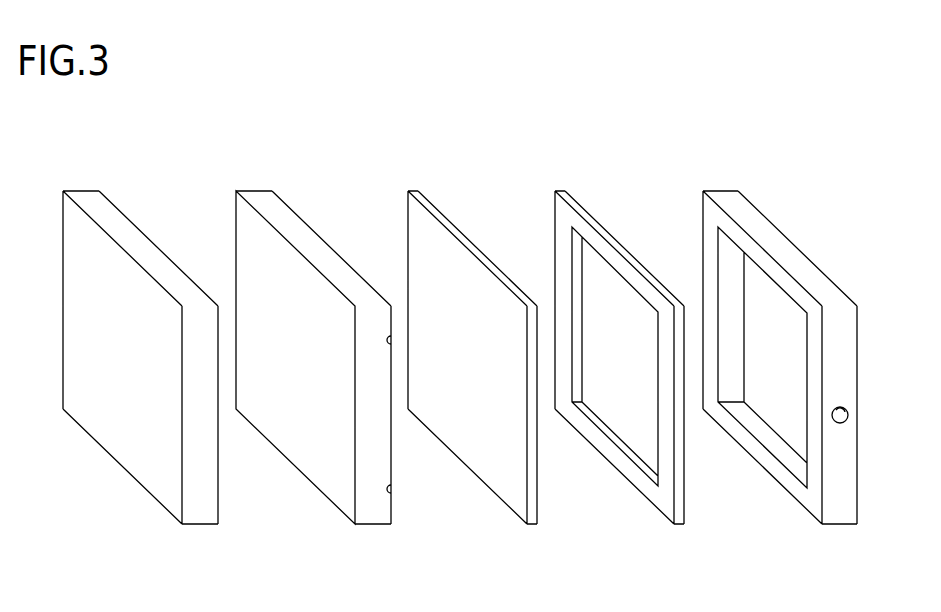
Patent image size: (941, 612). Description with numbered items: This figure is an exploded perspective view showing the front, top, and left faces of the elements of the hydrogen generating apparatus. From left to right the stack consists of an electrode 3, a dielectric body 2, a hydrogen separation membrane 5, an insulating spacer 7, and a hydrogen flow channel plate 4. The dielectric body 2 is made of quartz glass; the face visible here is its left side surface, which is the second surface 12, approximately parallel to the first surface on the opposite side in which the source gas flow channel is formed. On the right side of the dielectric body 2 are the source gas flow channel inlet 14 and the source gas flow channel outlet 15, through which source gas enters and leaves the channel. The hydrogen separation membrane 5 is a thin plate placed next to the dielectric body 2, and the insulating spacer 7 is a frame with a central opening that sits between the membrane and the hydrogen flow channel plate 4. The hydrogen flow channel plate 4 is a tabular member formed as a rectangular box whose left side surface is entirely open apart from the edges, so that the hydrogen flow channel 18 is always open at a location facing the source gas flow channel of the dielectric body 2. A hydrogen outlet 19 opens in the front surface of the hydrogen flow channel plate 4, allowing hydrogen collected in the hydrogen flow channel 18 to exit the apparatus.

The electrode 3 is at (108, 218).
The dielectric body 2 is at (282, 218).
The second surface 12 is at (281, 368).
The source gas flow channel inlet 14 is at (389, 340).
The source gas flow channel outlet 15 is at (389, 489).
The hydrogen separation membrane 5 is at (445, 218).
The insulating spacer 7 is at (588, 215).
The hydrogen flow channel plate 4 is at (742, 218).
The hydrogen flow channel 18 is at (780, 408).
The hydrogen outlet 19 is at (845, 423).